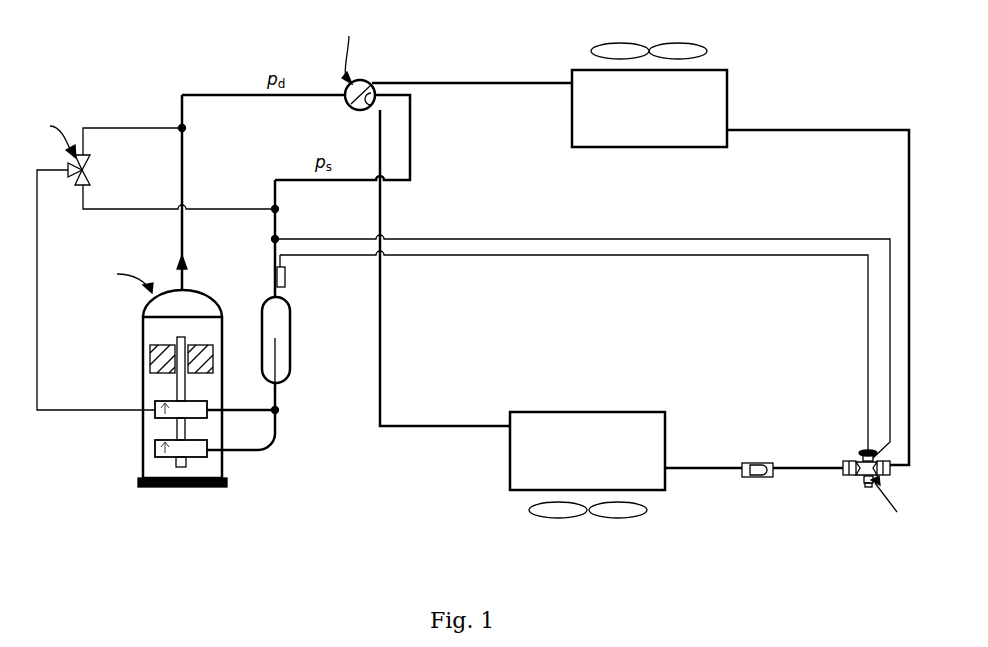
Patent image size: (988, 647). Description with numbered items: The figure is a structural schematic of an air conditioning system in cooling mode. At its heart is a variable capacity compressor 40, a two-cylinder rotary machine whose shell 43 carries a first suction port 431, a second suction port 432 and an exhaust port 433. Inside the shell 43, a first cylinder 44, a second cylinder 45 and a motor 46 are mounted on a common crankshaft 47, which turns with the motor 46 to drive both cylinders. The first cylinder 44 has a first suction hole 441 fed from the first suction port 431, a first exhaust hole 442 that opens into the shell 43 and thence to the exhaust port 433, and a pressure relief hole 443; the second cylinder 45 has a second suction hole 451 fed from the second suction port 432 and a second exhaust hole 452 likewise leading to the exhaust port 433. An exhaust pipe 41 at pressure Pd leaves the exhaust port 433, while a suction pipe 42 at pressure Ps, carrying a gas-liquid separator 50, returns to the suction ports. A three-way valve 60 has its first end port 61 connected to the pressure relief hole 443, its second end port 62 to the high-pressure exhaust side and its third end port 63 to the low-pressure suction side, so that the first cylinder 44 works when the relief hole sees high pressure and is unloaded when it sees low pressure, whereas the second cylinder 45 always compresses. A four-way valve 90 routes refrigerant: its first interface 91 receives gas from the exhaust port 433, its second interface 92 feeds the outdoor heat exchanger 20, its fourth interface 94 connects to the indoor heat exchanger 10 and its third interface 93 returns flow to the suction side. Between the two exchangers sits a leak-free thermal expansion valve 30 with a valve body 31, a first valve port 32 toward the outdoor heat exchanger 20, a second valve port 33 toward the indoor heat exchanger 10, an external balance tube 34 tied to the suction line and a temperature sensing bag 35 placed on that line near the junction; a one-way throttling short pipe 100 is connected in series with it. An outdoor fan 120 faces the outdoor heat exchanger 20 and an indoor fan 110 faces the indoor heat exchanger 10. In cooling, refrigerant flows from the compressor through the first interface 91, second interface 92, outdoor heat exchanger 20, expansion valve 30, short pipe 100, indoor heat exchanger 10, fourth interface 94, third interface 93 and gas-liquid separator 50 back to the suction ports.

The indoor heat exchanger 10 is at (598, 411).
The outdoor heat exchanger 20 is at (730, 80).
The leak-free thermal expansion valve 30 is at (877, 478).
The valve body 31 is at (868, 477).
The first valve port 32 is at (890, 470).
The second valve port 33 is at (845, 463).
The external balance tube 34 is at (632, 240).
The temperature sensing bag 35 is at (290, 276).
The variable capacity compressor 40 is at (173, 391).
The exhaust pipe 41 is at (238, 94).
The suction pipe 42 is at (278, 224).
The shell 43 is at (143, 328).
The first cylinder 44 is at (155, 404).
The second cylinder 45 is at (165, 452).
The motor 46 is at (152, 356).
The crankshaft 47 is at (183, 465).
The gas-liquid separator 50 is at (264, 305).
The three-way valve 60 is at (150, 263).
The first end port 61 is at (70, 172).
The second end port 62 is at (85, 165).
The third end port 63 is at (85, 177).
The four-way valve 90 is at (377, 221).
The first interface 91 is at (263, 107).
The second interface 92 is at (472, 72).
The third interface 93 is at (342, 137).
The fourth interface 94 is at (432, 268).
The one-way throttling short pipe 100 is at (758, 462).
The indoor fan 110 is at (626, 518).
The outdoor fan 120 is at (693, 43).
The first suction port 431 is at (262, 410).
The second suction port 432 is at (225, 455).
The exhaust port 433 is at (184, 290).
The first suction hole 441 is at (210, 405).
The first exhaust hole 442 is at (162, 396).
The pressure relief hole 443 is at (147, 418).
The second suction hole 451 is at (208, 447).
The second exhaust hole 452 is at (162, 437).